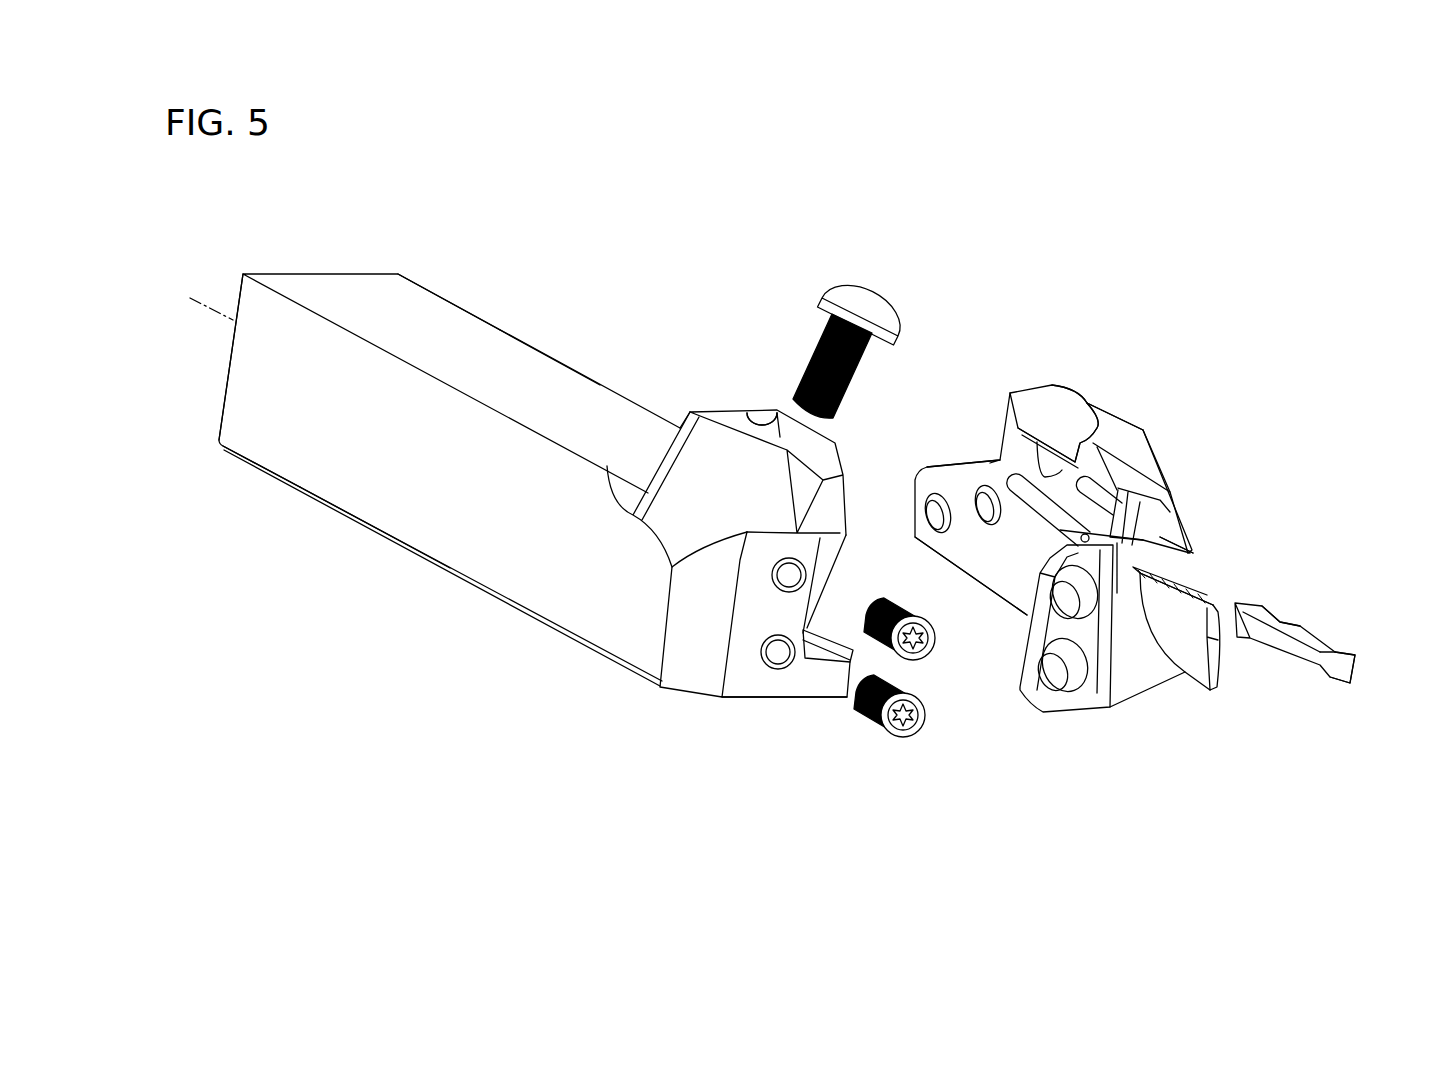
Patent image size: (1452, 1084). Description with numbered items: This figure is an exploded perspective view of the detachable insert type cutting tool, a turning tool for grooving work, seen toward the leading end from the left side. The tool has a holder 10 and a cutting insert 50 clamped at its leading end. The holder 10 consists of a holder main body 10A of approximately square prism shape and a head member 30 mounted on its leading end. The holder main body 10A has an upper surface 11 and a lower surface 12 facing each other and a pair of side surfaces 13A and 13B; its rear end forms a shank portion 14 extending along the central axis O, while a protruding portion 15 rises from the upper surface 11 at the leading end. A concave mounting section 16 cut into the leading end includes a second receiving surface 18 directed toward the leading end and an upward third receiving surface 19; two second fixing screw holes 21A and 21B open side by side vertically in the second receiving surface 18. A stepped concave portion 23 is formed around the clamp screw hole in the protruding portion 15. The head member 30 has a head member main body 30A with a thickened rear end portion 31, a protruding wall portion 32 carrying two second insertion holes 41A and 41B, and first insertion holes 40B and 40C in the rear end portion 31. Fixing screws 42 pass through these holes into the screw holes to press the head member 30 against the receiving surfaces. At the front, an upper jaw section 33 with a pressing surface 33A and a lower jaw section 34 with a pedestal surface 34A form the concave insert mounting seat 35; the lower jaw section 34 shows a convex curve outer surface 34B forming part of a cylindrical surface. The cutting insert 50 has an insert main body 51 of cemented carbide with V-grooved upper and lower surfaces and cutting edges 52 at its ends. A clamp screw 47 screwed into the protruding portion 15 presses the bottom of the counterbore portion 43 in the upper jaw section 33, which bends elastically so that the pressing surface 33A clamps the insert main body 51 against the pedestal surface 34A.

The holder 10 is at (917, 250).
The holder main body 10A is at (483, 300).
The upper surface 11 is at (407, 307).
The lower surface 12 is at (358, 497).
The side surface 13A is at (500, 350).
The side surface 13B is at (282, 452).
The shank portion 14 is at (250, 386).
The protruding portion 15 is at (678, 397).
The mounting section 16 is at (835, 572).
The second receiving surface 18 is at (795, 685).
The third receiving surface 19 is at (818, 633).
The second fixing screw hole 21A is at (789, 575).
The second fixing screw hole 21B is at (778, 652).
The concave portion 23 is at (780, 412).
The head member 30 is at (1175, 350).
The head member main body 30A is at (1133, 425).
The rear end portion 31 is at (975, 563).
The protruding wall portion 32 is at (1083, 693).
The upper jaw section 33 is at (1168, 507).
The pressing surface 33A is at (1183, 555).
The lower jaw section 34 is at (1212, 660).
The pedestal surface 34A is at (1200, 600).
The convex curve outer surface 34B is at (1198, 665).
The insert mounting seat 35 is at (1272, 520).
The first insertion hole 40B is at (978, 503).
The first insertion hole 40C is at (928, 510).
The second insertion hole 41A is at (1063, 600).
The second insertion hole 41B is at (1058, 672).
The fixing screw 42 is at (917, 730).
The counterbore portion 43 is at (1050, 413).
The clamp screw 47 is at (838, 287).
The cutting insert 50 is at (1338, 610).
The insert main body 51 is at (1350, 672).
The cutting edge 52 is at (1259, 605).
The central axis O is at (203, 307).